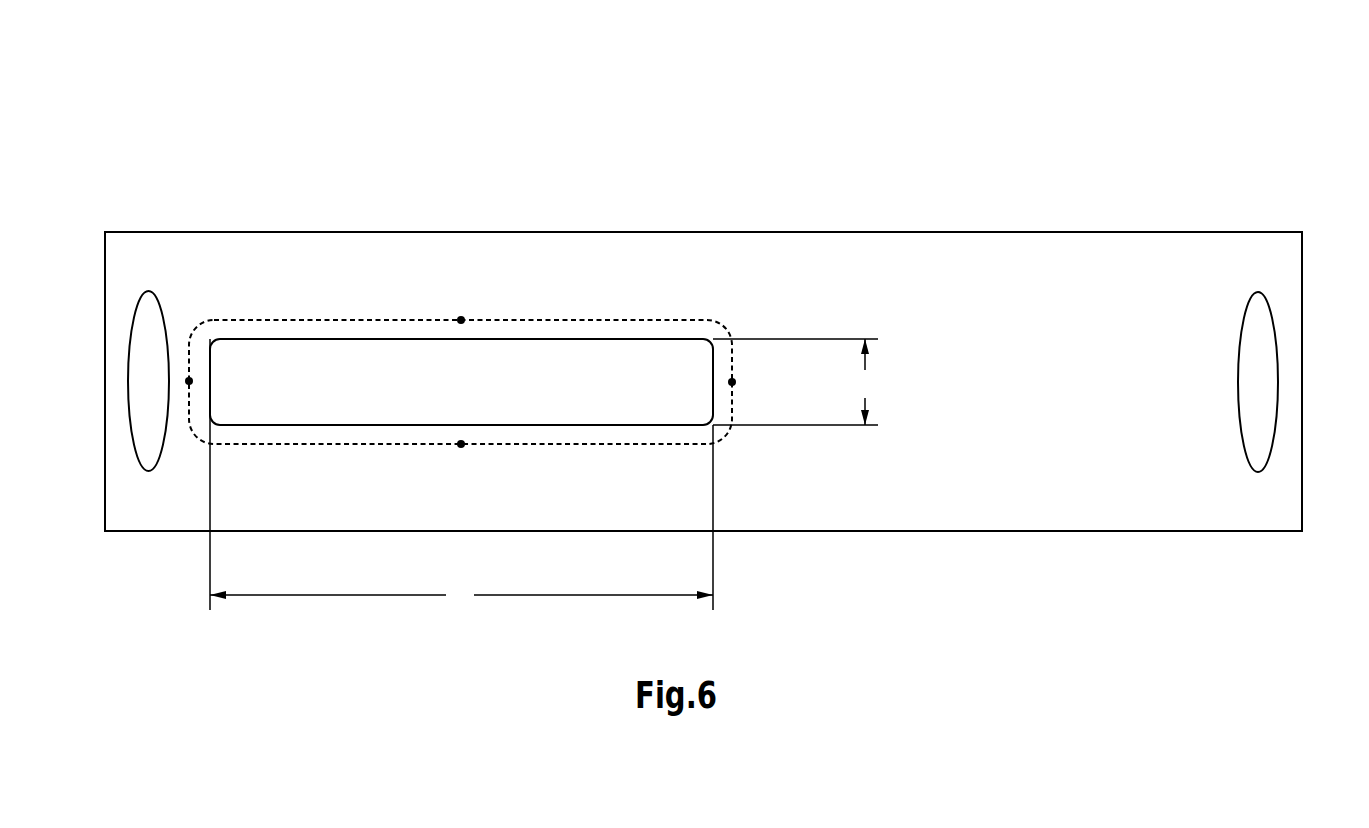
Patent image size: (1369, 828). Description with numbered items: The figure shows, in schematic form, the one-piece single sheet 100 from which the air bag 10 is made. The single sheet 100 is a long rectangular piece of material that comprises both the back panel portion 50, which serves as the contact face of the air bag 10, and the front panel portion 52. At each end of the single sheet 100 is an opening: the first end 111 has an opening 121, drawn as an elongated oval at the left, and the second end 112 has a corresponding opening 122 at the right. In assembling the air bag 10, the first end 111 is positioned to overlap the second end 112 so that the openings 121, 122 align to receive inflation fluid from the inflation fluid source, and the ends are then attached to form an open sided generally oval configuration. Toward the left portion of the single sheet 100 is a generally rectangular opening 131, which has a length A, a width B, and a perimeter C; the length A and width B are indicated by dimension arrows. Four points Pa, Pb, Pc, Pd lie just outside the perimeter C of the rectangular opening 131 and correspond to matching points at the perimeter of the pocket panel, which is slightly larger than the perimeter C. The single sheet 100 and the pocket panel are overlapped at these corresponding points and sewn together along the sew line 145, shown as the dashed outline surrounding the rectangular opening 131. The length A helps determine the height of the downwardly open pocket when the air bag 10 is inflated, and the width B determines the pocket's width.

The air bag 10 is at (1120, 90).
The single sheet 100 is at (1026, 142).
The back panel portion 50 is at (1082, 260).
The front panel portion 52 is at (291, 268).
The first end 111 is at (110, 361).
The opening 121 is at (140, 406).
The second end 112 is at (1293, 336).
The opening 122 is at (1262, 372).
The rectangular opening 131 is at (582, 385).
The sew line 145 is at (693, 318).
The perimeter C is at (404, 340).
The point Pa is at (193, 381).
The point Pb is at (728, 382).
The point Pc is at (461, 324).
The point Pd is at (461, 440).
The length A is at (461, 474).
The width B is at (795, 382).